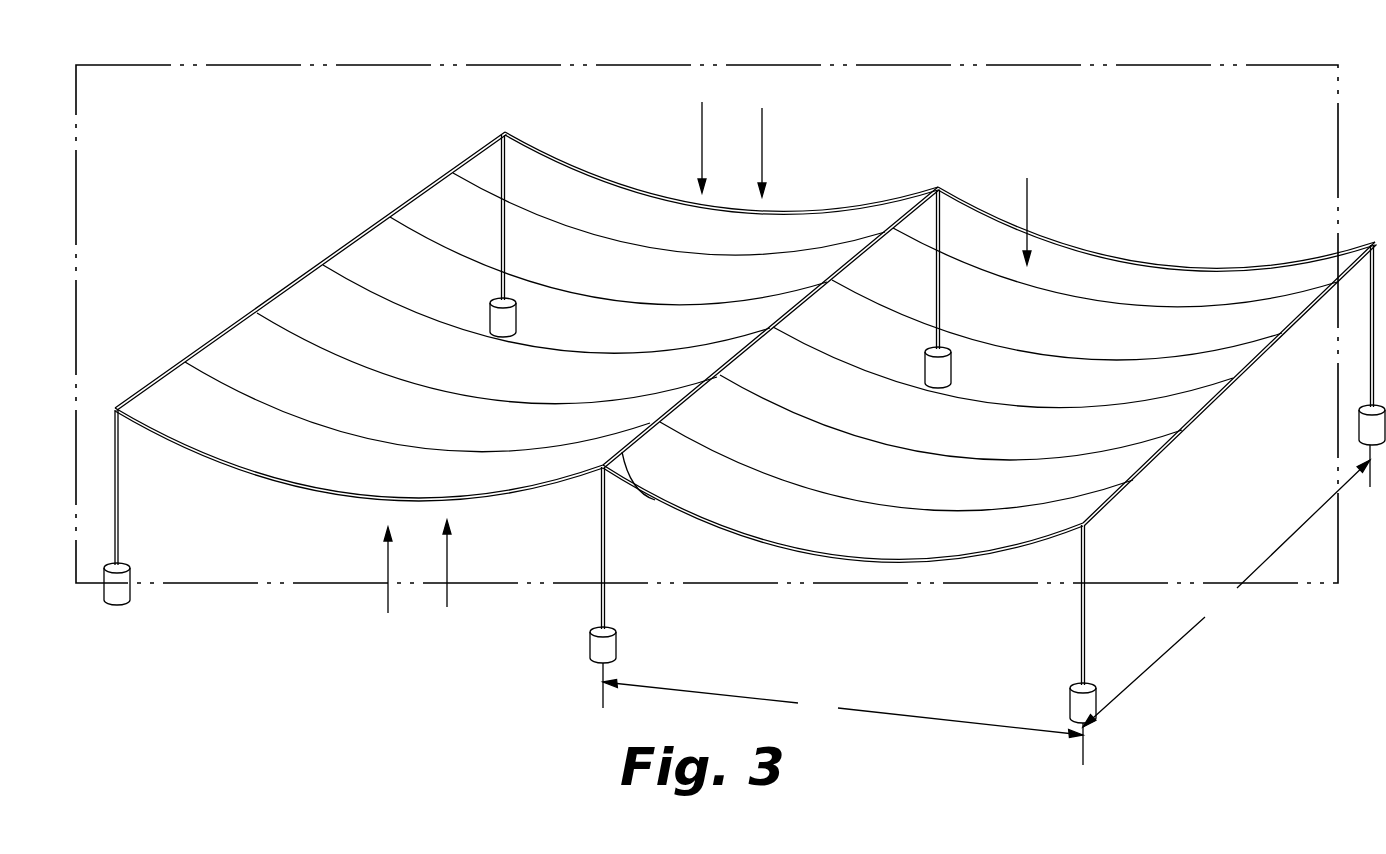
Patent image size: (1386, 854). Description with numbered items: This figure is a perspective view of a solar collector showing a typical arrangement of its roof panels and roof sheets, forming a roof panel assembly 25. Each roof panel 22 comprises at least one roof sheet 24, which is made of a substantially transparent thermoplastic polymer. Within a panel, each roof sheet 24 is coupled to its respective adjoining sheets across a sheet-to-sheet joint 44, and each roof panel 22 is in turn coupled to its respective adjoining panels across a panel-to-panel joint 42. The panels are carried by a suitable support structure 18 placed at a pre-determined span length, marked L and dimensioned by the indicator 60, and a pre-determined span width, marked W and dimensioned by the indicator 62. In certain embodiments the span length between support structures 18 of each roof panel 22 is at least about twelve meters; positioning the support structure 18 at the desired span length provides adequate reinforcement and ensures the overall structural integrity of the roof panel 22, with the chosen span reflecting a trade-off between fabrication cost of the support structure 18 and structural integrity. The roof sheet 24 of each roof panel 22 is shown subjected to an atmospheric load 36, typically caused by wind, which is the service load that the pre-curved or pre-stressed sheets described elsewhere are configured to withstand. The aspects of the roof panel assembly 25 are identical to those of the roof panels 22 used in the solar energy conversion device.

The support structure 18 is at (1080, 637).
The roof panel 22 is at (292, 490).
The roof sheet 24 is at (570, 180).
The roof panel assembly 25 is at (282, 583).
The atmospheric load 36 is at (767, 133).
The panel-to-panel joint 42 is at (655, 503).
The sheet-to-sheet joint 44 is at (237, 343).
The length dimension 60 is at (950, 723).
The width dimension 62 is at (1157, 665).